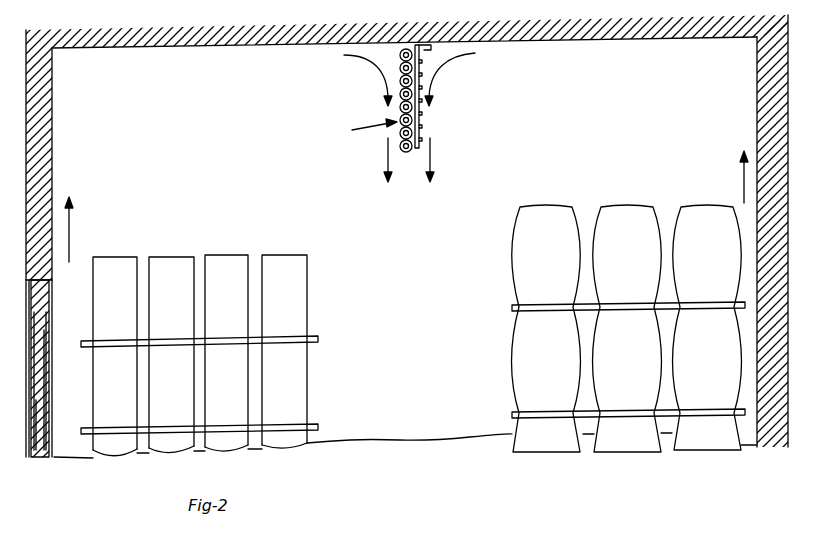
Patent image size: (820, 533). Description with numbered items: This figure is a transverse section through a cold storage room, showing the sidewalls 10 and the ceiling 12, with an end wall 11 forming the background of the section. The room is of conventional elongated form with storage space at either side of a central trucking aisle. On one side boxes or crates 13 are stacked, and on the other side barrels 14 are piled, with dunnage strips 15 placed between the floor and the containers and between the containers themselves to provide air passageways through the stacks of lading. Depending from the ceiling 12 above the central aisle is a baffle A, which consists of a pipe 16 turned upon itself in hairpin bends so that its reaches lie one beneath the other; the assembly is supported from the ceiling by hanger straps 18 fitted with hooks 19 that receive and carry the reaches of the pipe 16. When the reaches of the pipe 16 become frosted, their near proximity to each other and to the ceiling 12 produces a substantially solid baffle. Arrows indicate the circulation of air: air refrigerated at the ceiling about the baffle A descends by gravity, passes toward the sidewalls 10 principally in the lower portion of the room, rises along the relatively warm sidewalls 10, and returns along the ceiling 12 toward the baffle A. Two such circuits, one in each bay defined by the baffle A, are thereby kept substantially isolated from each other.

The sidewalls 10 is at (42, 166).
The end walls 11 is at (410, 428).
The ceiling 12 is at (646, 27).
The boxes or crates 13 is at (222, 255).
The barrels 14 is at (624, 212).
The dunnage strips 15 is at (318, 338).
The pipe 16 is at (400, 66).
The hanger straps 18 is at (421, 108).
The hooks 19 is at (399, 110).
The baffle A is at (365, 130).